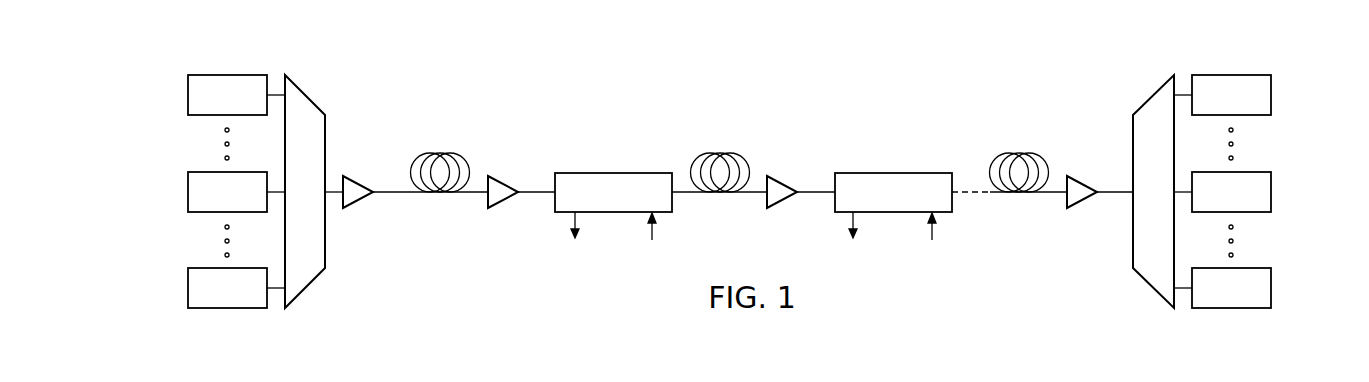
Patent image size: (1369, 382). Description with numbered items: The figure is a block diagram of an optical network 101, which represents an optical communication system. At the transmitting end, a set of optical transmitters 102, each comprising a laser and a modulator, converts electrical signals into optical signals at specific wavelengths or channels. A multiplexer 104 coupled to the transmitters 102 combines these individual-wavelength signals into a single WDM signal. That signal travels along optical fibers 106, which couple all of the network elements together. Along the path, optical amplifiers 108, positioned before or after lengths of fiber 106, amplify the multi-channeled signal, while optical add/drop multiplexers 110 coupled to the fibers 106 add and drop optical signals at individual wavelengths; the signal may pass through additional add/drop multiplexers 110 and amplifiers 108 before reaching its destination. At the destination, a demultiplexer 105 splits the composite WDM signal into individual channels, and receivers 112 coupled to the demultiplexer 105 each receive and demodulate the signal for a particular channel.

The optical network 101 is at (436, 42).
The transmitters 102 is at (188, 84).
The multiplexer 104 is at (307, 97).
The demultiplexer 105 is at (1156, 93).
The optical fibers 106 is at (440, 153).
The optical amplifiers 108 is at (358, 186).
The optical add/drop multiplexers 110 is at (614, 173).
The receivers 112 is at (1271, 83).